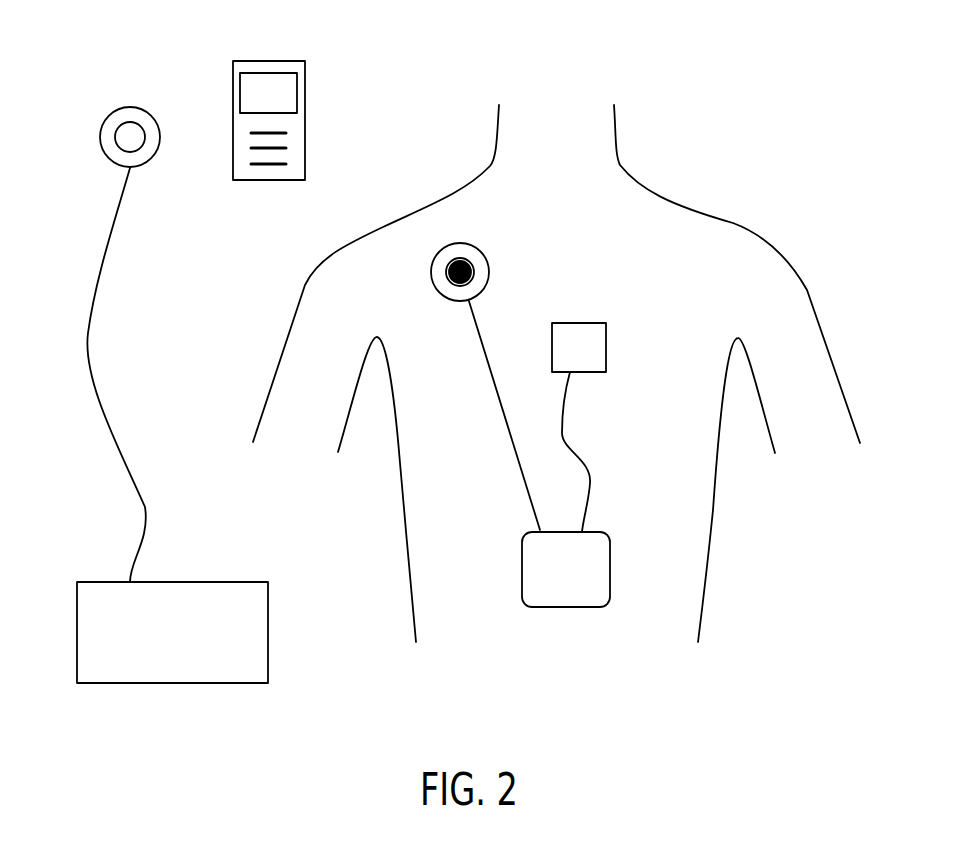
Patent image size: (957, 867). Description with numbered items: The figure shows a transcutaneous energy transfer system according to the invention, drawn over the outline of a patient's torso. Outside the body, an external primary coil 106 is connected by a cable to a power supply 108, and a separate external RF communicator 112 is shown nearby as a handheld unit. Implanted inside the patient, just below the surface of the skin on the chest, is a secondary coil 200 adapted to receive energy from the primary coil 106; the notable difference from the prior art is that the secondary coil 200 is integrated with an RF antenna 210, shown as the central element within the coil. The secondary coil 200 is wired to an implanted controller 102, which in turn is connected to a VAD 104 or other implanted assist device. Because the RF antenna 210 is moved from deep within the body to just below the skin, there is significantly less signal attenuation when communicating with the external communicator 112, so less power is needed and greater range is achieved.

The controller 102 is at (552, 581).
The VAD 104 is at (565, 360).
The external primary coil 106 is at (128, 107).
The power supply 108 is at (159, 644).
The external RF communicator 112 is at (268, 60).
The secondary coil 200 is at (475, 245).
The RF antenna 210 is at (473, 273).